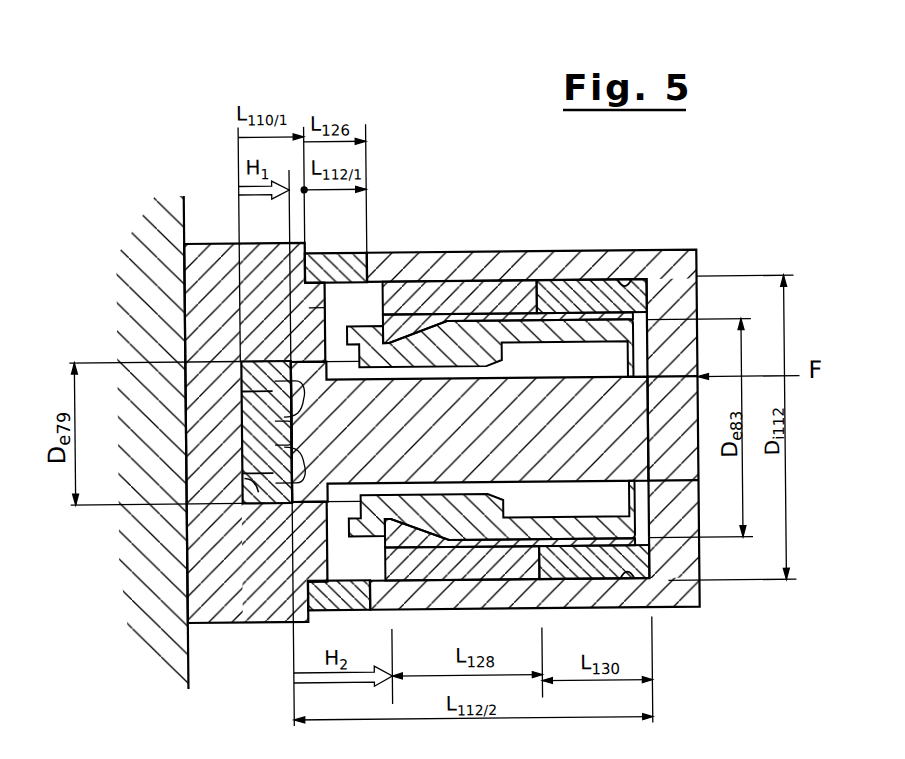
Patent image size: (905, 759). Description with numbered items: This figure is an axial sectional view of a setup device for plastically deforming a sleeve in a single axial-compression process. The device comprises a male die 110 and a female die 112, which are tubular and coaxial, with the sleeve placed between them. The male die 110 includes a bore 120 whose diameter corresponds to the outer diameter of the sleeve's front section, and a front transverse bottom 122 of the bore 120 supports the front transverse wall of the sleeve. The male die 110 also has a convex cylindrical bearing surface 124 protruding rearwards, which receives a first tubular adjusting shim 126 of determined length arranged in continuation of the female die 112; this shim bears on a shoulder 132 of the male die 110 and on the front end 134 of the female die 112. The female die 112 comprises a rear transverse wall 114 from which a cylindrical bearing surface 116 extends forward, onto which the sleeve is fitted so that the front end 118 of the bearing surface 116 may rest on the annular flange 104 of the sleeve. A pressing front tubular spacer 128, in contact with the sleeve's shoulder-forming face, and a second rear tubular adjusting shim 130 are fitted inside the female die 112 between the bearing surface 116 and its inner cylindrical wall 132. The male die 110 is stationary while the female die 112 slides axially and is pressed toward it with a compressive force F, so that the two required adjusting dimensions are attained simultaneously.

The annular flange 104 is at (287, 380).
The male die 110 is at (240, 605).
The female die 112 is at (688, 608).
The rear transverse wall 114 is at (650, 611).
The cylindrical bearing surface 116 is at (628, 452).
The front end 118 is at (253, 487).
The bore 120 is at (257, 360).
The front transverse bottom 122 is at (242, 492).
The convex cylindrical bearing surface 124 is at (398, 285).
The first tubular adjusting shim 126 is at (340, 260).
The pressing front tubular spacer 128 is at (504, 288).
The second rear tubular adjusting shim 130 is at (558, 293).
The inner cylindrical wall 132 is at (628, 288).
The front end 134 is at (326, 308).